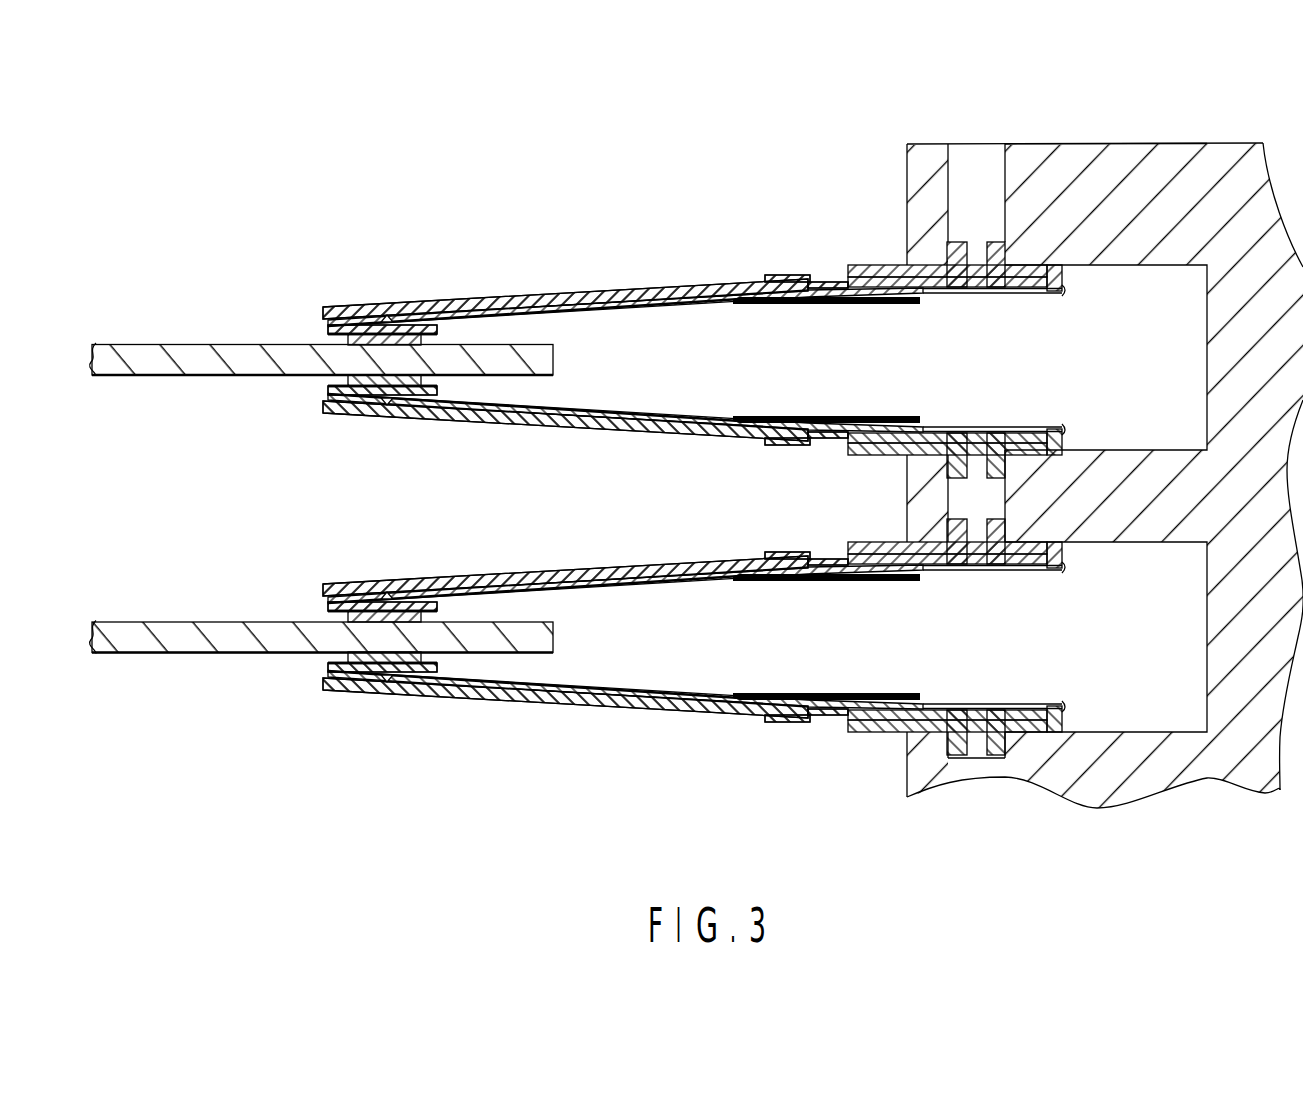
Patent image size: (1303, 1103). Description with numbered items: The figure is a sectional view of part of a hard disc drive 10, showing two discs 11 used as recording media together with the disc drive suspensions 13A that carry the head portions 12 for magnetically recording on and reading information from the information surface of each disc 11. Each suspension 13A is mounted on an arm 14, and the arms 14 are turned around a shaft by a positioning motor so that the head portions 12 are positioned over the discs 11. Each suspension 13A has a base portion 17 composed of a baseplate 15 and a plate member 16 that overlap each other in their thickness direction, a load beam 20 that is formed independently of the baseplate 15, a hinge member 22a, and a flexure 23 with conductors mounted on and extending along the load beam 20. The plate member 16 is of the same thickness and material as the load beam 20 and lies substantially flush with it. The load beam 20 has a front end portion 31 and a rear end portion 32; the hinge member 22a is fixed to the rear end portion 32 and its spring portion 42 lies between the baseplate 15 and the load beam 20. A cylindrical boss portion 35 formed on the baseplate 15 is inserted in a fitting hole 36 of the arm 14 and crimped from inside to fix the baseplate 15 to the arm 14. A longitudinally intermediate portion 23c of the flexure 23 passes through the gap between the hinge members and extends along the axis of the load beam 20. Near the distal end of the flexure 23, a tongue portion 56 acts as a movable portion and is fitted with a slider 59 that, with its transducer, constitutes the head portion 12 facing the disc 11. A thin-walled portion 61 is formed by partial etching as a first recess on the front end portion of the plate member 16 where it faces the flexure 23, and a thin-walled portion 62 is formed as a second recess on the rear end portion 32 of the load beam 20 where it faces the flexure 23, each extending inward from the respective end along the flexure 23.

The hard disc drive 10 is at (1137, 112).
The disc 11 is at (178, 343).
The head portion 12 is at (328, 294).
The disc drive suspension 13A is at (650, 260).
The arm 14 is at (1035, 160).
The baseplate 15 is at (870, 268).
The plate member 16 is at (998, 290).
The base portion 17 is at (1030, 297).
The load beam 20 is at (533, 292).
The hinge member 22a is at (885, 305).
The flexure with conductors 23 is at (612, 307).
The longitudinally intermediate portion 23c is at (818, 285).
The front end portion 31 is at (344, 323).
The rear end portion 32 is at (785, 274).
The boss portion 35 is at (1064, 279).
The fitting hole 36 is at (953, 162).
The spring portion 42 is at (820, 305).
The tongue portion 56 is at (395, 318).
The slider 59 is at (350, 339).
The thin-walled portion 61 is at (852, 280).
The thin-walled portion 62 is at (815, 285).